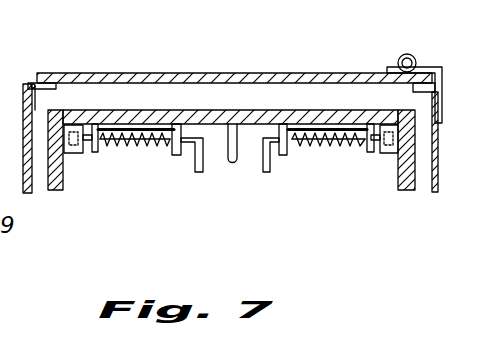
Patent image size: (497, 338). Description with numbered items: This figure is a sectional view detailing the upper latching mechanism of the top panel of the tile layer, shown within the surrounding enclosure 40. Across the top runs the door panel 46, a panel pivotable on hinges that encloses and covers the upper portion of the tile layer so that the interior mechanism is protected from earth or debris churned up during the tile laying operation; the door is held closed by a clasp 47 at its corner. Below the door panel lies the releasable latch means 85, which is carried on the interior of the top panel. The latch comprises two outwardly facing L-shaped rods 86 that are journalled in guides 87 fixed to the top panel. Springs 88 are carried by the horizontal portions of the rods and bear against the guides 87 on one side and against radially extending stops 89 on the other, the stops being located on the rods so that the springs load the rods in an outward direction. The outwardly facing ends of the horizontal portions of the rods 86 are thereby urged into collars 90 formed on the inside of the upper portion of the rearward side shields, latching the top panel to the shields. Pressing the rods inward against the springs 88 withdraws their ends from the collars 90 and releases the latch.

The housing frame 40 is at (220, 111).
The door panel 46 is at (273, 72).
The clasp 47 is at (430, 66).
The releasable latch means 85 is at (214, 218).
The L-shaped rods 86 is at (266, 172).
The guides 87 is at (85, 156).
The springs 88 is at (123, 148).
The radially extending stops 89 is at (90, 153).
The collars 90 is at (70, 156).